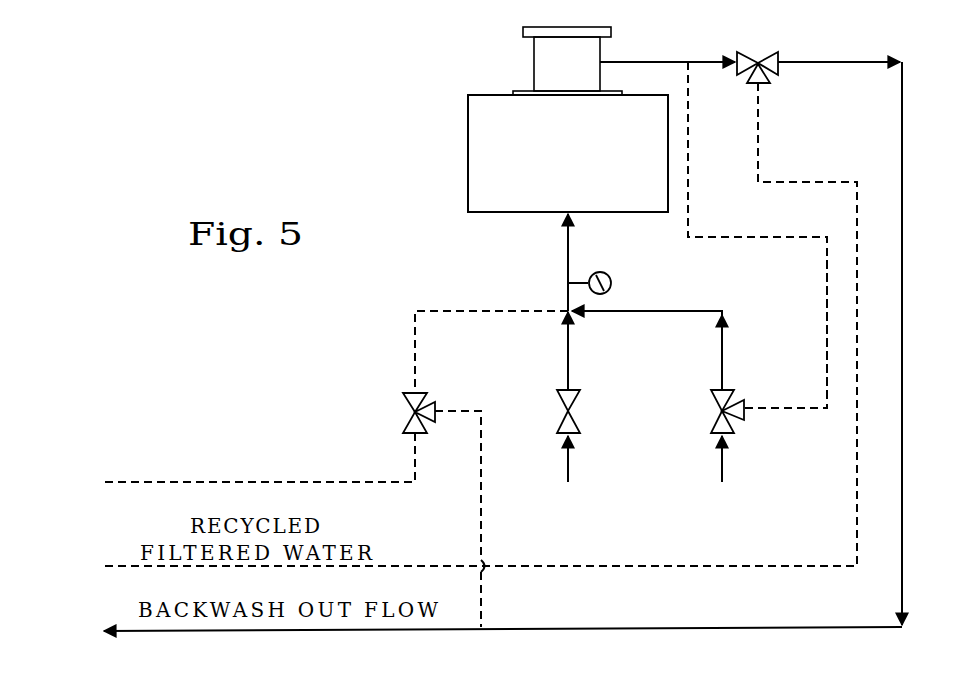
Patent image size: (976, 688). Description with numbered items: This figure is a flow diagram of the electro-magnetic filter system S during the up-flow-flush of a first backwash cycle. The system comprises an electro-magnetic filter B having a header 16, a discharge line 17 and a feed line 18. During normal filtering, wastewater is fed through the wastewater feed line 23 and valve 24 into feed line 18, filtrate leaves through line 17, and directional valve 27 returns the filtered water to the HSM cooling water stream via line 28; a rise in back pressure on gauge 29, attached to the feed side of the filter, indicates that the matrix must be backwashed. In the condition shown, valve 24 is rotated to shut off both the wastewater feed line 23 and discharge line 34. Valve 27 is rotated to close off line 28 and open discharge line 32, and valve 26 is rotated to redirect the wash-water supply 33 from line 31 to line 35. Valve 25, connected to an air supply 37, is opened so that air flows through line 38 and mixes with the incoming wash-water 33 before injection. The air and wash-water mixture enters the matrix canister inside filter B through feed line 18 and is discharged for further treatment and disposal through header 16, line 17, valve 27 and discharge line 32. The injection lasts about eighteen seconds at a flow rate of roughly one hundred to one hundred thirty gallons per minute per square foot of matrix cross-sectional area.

The electro-magnetic filter B is at (468, 160).
The electro-magnetic filter system S is at (368, 262).
The header 16 is at (540, 62).
The discharge line 17 is at (650, 62).
The feed line 18 is at (568, 260).
The wastewater feed line 23 is at (330, 482).
The valve 24 is at (408, 400).
The valve 25 is at (580, 400).
The valve 26 is at (733, 393).
The directional valve 27 is at (778, 52).
The line 28 is at (758, 130).
The gauge 29 is at (612, 277).
The line 31 is at (827, 332).
The discharge line 32 is at (847, 60).
The wash-water supply 33 is at (727, 490).
The discharge line 34 is at (482, 500).
The line 35 is at (722, 358).
The air supply 37 is at (570, 490).
The line 38 is at (568, 360).